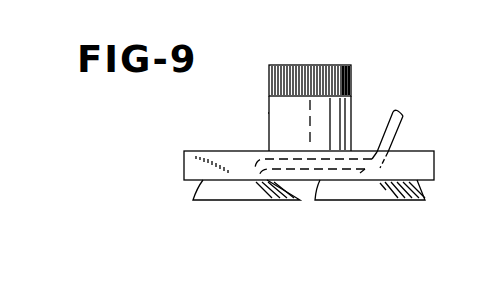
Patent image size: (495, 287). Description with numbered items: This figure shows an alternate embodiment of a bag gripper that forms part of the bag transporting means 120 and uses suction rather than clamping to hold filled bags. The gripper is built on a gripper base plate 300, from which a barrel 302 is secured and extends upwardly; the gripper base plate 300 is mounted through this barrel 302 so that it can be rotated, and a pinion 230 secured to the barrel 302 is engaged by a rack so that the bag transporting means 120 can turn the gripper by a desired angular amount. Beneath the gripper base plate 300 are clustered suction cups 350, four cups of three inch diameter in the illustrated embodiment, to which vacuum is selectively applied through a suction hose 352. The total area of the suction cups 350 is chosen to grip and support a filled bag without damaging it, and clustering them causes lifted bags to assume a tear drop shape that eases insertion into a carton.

The bag transporting means 120 is at (249, 90).
The pinion 230 is at (352, 72).
The gripper base plate 300 is at (195, 151).
The barrel 302 is at (267, 114).
The suction cups 350 is at (288, 197).
The suction hose 352 is at (398, 130).